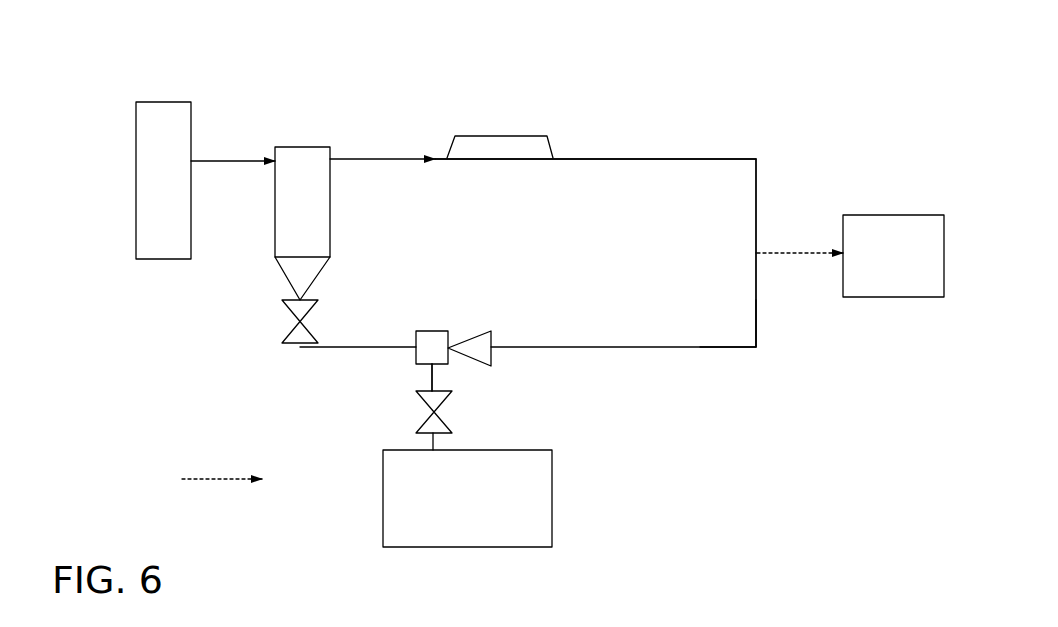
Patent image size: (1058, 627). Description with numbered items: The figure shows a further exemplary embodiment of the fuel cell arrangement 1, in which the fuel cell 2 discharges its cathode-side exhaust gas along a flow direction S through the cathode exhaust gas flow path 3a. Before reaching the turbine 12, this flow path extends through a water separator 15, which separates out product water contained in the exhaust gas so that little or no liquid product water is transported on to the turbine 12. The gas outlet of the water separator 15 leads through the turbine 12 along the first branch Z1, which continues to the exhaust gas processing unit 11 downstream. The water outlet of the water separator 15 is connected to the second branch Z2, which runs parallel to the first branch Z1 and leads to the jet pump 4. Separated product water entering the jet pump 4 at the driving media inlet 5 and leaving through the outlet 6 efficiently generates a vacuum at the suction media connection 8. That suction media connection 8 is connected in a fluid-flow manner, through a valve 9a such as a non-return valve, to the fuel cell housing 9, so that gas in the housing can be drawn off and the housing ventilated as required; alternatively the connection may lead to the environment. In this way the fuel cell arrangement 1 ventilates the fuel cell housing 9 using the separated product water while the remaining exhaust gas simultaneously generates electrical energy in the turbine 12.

The fuel cell arrangement 1 is at (813, 166).
The fuel cell 2 is at (155, 102).
The cathode exhaust gas flow path 3a is at (632, 108).
The jet pump 4 is at (418, 356).
The driving media inlet 5 is at (408, 330).
The outlet 6 is at (510, 324).
The suction media connection 8 is at (415, 373).
The fuel cell housing 9 is at (552, 492).
The valve 9a is at (421, 422).
The exhaust gas processing unit 11 is at (860, 297).
The turbine 12 is at (476, 136).
The water separator 15 is at (300, 147).
The first branch Z1 is at (726, 135).
The second branch Z2 is at (760, 372).
The flow direction S is at (218, 479).